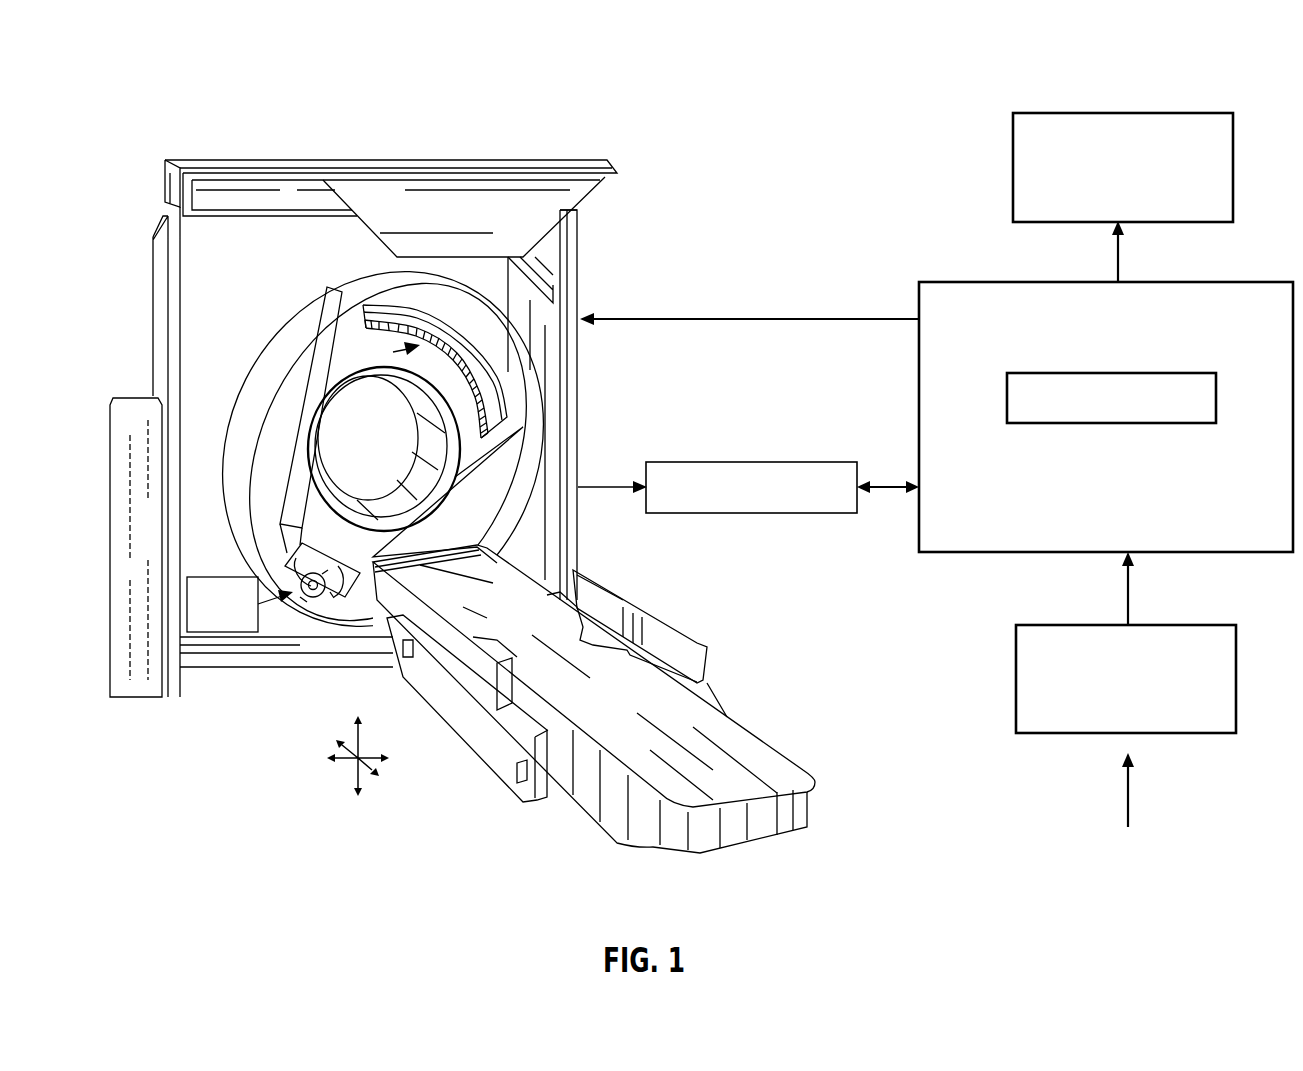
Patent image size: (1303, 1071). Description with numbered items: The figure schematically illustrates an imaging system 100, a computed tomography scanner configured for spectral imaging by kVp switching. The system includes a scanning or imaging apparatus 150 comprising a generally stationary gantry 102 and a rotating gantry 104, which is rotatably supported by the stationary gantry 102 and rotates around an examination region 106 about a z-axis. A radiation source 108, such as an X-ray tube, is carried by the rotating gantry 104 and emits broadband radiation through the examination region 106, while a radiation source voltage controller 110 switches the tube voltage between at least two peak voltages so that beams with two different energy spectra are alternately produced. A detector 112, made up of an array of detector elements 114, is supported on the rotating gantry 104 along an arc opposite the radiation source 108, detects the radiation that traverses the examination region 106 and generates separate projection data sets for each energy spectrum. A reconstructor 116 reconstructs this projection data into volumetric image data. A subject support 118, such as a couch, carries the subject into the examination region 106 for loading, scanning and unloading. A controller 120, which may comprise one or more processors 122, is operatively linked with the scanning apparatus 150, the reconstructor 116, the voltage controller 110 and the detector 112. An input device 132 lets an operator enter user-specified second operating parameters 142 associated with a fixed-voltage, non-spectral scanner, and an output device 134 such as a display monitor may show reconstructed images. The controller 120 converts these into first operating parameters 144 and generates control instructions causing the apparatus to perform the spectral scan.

The imaging system 100 is at (180, 83).
The stationary gantry 102 is at (172, 290).
The rotating gantry 104 is at (318, 342).
The examination region 106 is at (388, 466).
The radiation source 108 is at (312, 597).
The radiation source voltage controller 110 is at (224, 636).
The detector 112 is at (490, 372).
The detector elements 114 is at (385, 353).
The reconstructor 116 is at (755, 515).
The subject support 118 is at (749, 753).
The controller 120 is at (1235, 282).
The processors 122 is at (1205, 373).
The input device 132 is at (1236, 672).
The user output device 134 is at (1200, 113).
The second operating parameters 142 is at (1208, 877).
The first operating parameters 144 is at (860, 265).
The scanning or imaging apparatus 150 is at (646, 184).